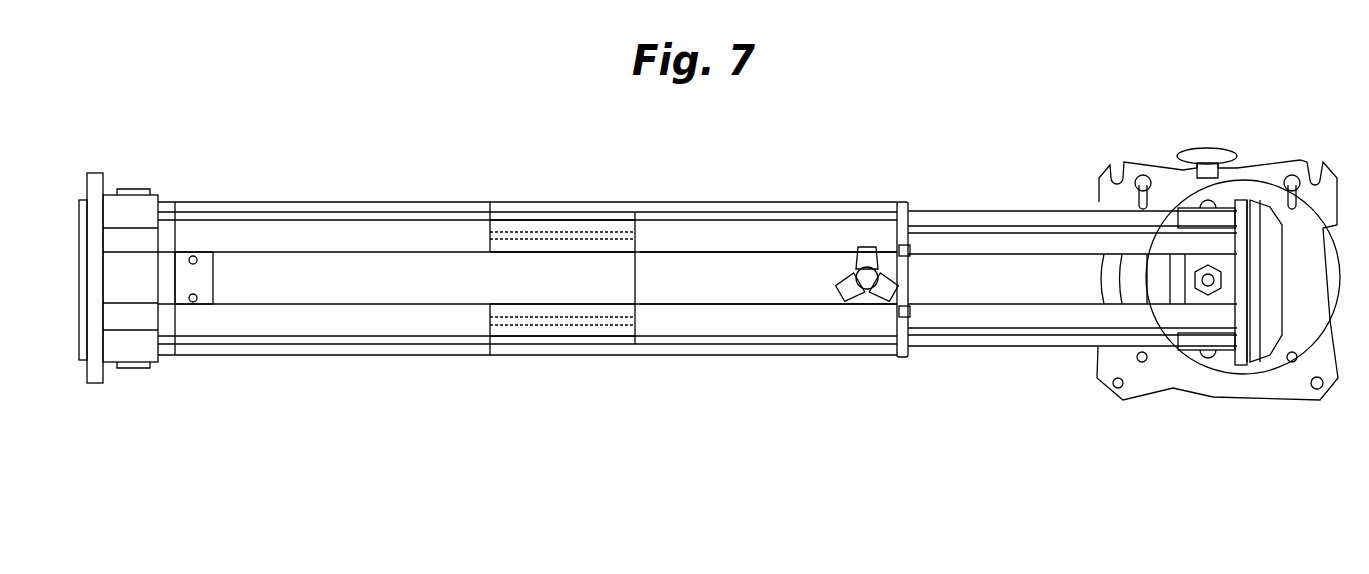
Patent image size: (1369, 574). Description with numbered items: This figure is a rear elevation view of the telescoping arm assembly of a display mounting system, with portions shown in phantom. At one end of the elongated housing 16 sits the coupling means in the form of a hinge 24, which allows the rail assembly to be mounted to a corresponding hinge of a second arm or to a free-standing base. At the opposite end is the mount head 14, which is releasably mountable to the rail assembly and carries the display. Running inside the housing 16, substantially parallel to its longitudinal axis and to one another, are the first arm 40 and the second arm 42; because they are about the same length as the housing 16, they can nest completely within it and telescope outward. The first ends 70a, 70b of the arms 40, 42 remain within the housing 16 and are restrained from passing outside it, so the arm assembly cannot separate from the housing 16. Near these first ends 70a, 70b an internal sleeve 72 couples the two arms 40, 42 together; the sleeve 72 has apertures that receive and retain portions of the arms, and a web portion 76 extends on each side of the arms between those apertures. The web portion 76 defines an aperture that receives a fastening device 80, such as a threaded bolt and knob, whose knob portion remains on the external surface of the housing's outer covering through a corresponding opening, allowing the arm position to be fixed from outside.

The mount head 14 is at (1293, 163).
The housing 16 is at (728, 202).
The hinge 24 is at (150, 362).
The first arm 40 is at (591, 232).
The second arm 42 is at (598, 344).
The first end of first arm 70a is at (490, 202).
The first end of second arm 70b is at (490, 355).
The internal sleeve 72 is at (883, 205).
The web portion 76 is at (807, 267).
The fastening device 80 is at (870, 260).